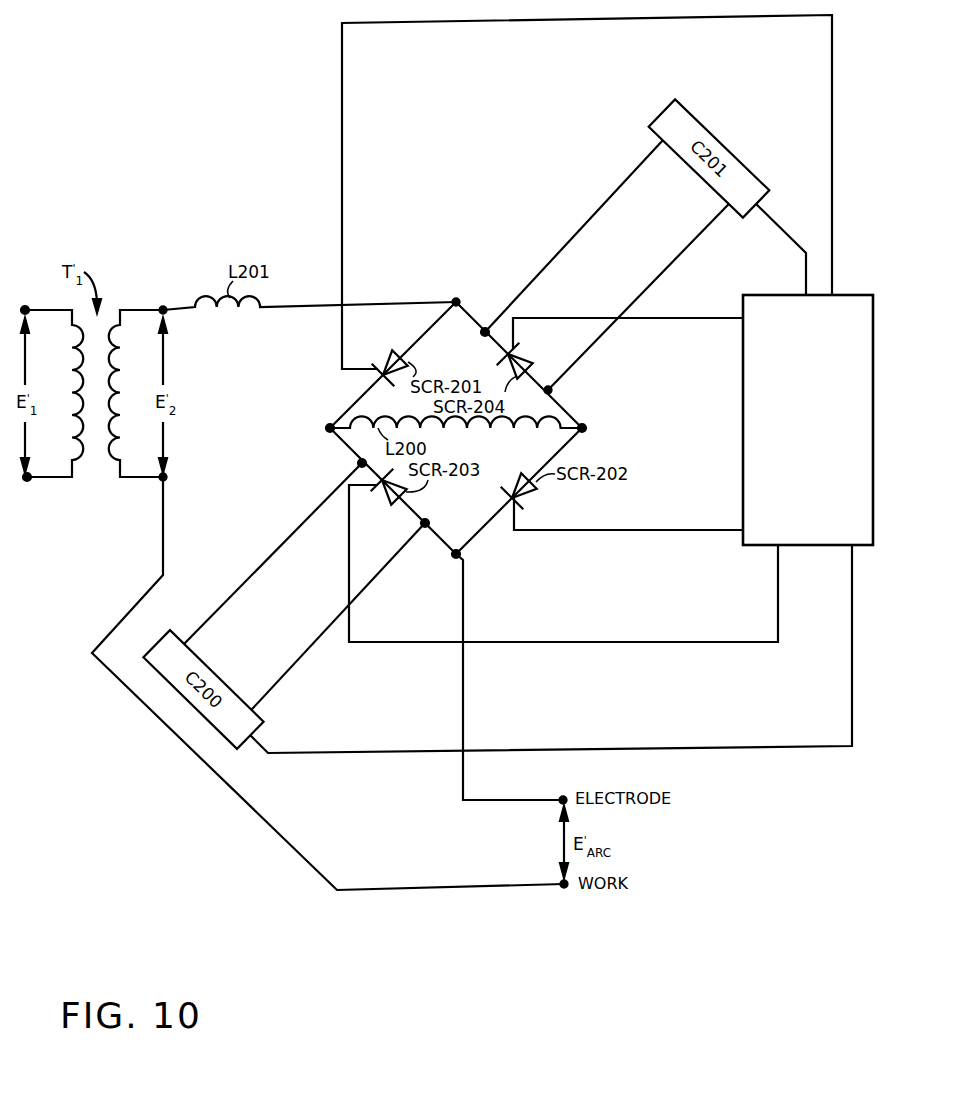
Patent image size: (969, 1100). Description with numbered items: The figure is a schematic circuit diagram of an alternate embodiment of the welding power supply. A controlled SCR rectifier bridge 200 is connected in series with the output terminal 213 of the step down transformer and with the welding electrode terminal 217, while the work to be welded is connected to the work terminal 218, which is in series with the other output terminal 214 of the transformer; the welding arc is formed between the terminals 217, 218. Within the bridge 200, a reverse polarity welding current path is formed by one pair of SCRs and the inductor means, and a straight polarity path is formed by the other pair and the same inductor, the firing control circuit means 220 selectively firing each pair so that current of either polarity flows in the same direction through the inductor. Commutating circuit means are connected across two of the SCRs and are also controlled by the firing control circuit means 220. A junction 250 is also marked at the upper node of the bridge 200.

The controlled SCR rectifier bridge 200 is at (568, 402).
The output terminal 213 is at (163, 305).
The output terminal 214 is at (160, 481).
The welding electrode terminal 217 is at (561, 797).
The work terminal 218 is at (563, 889).
The firing control circuit means 220 is at (863, 547).
The bridge top junction 250 is at (455, 300).